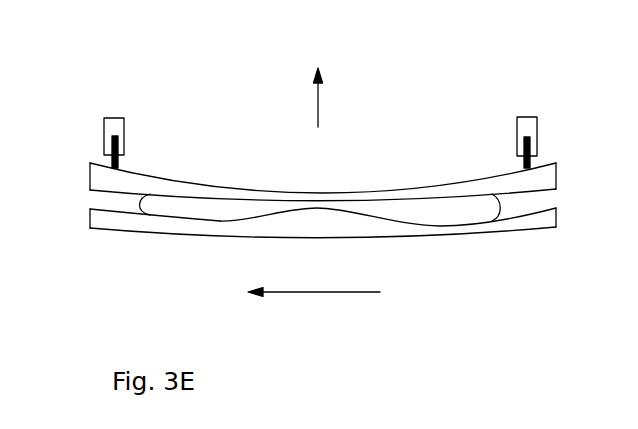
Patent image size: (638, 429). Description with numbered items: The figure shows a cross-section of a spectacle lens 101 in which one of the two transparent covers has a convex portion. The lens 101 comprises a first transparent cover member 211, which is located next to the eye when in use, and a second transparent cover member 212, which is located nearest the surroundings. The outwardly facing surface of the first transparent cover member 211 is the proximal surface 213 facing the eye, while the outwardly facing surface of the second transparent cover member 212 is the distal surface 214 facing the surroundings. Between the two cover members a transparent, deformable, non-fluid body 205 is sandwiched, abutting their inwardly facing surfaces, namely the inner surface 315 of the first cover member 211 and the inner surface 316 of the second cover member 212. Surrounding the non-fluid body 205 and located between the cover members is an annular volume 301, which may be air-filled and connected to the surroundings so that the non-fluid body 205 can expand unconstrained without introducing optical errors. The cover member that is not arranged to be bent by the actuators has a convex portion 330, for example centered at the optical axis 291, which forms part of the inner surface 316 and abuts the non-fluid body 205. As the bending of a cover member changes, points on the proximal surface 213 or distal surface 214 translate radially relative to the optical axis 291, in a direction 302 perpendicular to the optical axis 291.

The spectacle lens 101 is at (188, 64).
The optical axis 291 is at (293, 97).
The direction 302 is at (314, 306).
The first transparent cover member 211 is at (473, 167).
The proximal surface 213 is at (413, 168).
The inner surface of the first cover member 315 is at (184, 192).
The non-fluid body 205 is at (252, 206).
The convex portion 330 is at (322, 220).
The inner surface of the second cover member 316 is at (160, 218).
The annular volume 301 is at (120, 205).
The distal surface 214 is at (428, 237).
The second transparent cover member 212 is at (487, 227).